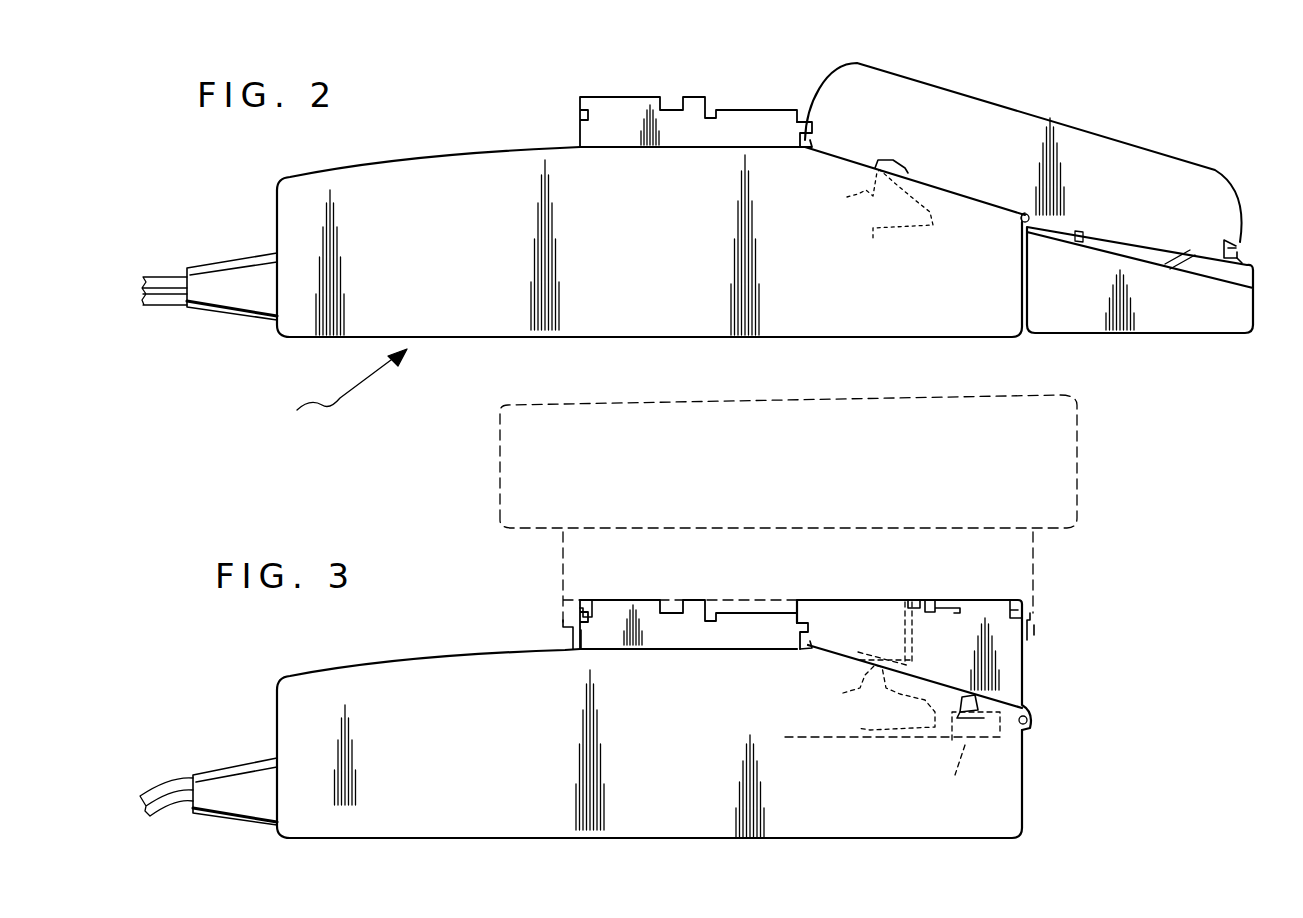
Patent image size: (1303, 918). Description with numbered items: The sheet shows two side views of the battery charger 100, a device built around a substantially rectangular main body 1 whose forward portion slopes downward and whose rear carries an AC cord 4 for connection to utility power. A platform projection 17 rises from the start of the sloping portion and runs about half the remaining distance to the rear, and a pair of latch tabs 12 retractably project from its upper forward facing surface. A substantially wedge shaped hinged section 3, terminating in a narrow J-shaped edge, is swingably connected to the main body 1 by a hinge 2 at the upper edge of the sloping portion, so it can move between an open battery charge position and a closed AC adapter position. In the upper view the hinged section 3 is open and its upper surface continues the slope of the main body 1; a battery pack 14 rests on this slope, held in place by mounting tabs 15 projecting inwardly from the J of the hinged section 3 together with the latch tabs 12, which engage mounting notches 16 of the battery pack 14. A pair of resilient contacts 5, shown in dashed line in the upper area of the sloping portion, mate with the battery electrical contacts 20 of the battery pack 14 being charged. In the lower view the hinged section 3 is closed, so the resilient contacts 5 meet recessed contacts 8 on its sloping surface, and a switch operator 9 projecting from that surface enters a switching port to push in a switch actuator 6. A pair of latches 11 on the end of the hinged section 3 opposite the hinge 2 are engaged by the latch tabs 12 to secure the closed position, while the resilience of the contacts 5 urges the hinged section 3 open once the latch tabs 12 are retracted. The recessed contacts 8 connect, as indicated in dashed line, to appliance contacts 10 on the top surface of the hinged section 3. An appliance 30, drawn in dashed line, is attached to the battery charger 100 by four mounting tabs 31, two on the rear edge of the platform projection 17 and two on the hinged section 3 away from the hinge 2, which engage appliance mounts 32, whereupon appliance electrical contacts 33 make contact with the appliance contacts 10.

In FIG. 2, the battery charger 100 is at (326, 387).
In FIG. 2, the main body 1 is at (472, 317).
In FIG. 3, the main body 1 is at (360, 815).
In FIG. 2, the hinge 2 is at (1020, 218).
In FIG. 3, the hinge 2 is at (1030, 730).
In FIG. 2, the hinged section 3 is at (1177, 313).
In FIG. 3, the hinged section 3 is at (820, 600).
In FIG. 2, the AC cord 4 is at (240, 296).
In FIG. 3, the AC cord 4 is at (213, 812).
In FIG. 2, the resilient contacts 5 is at (900, 255).
In FIG. 3, the resilient contacts 5 is at (846, 745).
In FIG. 3, the switch actuator 6 is at (976, 756).
In FIG. 3, the recessed contacts 8 is at (866, 660).
In FIG. 3, the switch operator 9 is at (987, 697).
In FIG. 3, the appliance contacts 10 is at (932, 600).
In FIG. 3, the latches 11 is at (813, 644).
In FIG. 2, the latch tabs 12 is at (810, 125).
In FIG. 3, the latch tabs 12 is at (800, 643).
In FIG. 2, the battery pack 14 is at (1017, 125).
In FIG. 2, the mounting tabs 15 is at (1243, 252).
In FIG. 2, the mounting notches 16 is at (815, 140).
In FIG. 2, the platform projection 17 is at (640, 97).
In FIG. 3, the platform projection 17 is at (688, 624).
In FIG. 2, the battery electrical contacts 20 is at (908, 172).
In FIG. 3, the appliance 30 is at (1043, 473).
In FIG. 3, the mounting tabs 31 is at (588, 600).
In FIG. 3, the appliance mounts 32 is at (570, 610).
In FIG. 3, the appliance electrical contacts 33 is at (917, 600).